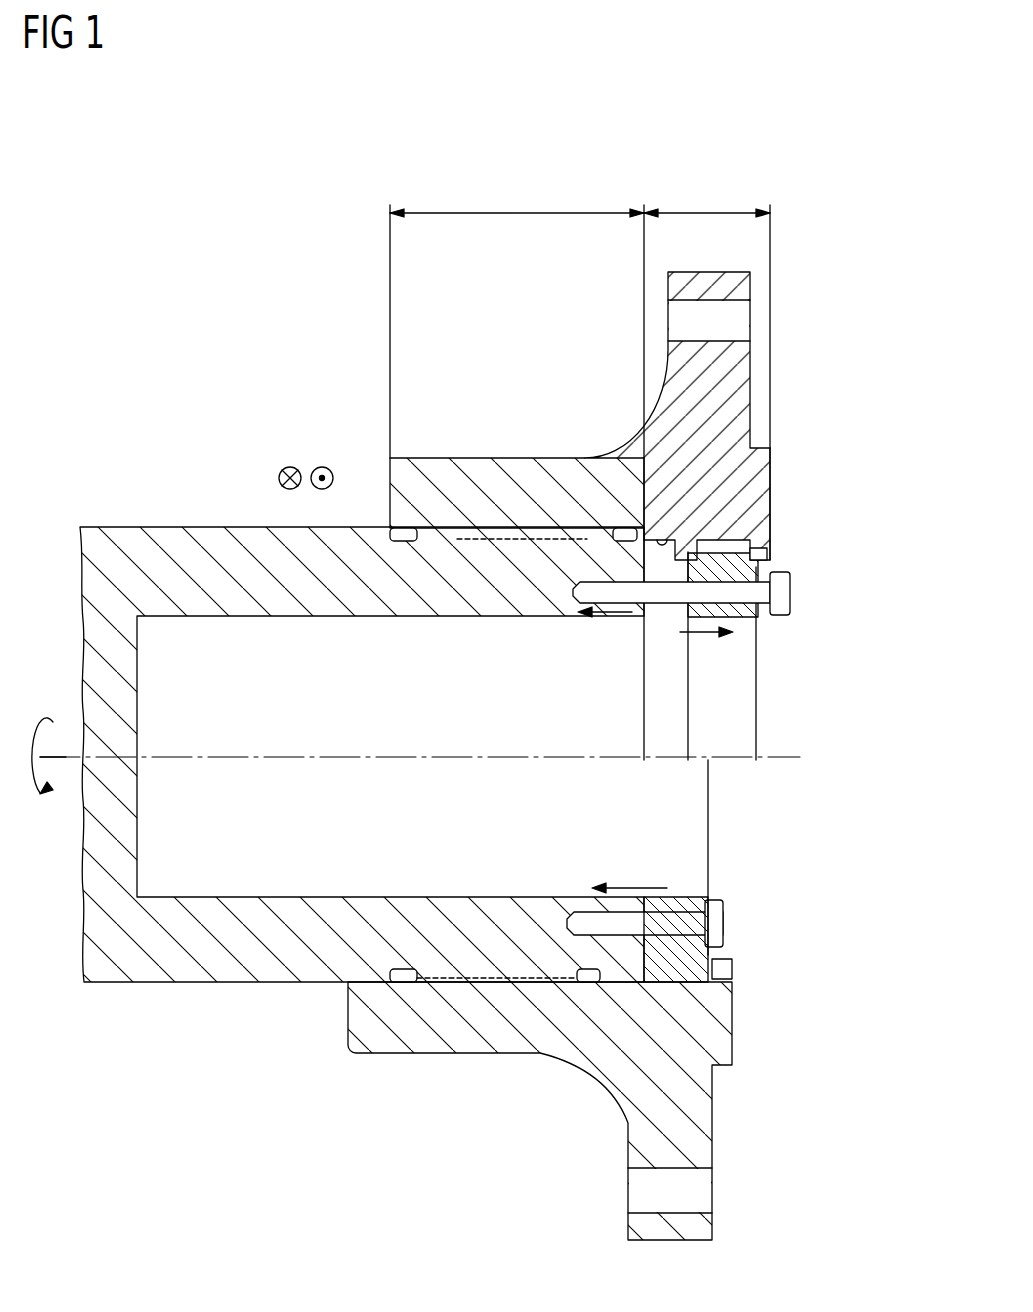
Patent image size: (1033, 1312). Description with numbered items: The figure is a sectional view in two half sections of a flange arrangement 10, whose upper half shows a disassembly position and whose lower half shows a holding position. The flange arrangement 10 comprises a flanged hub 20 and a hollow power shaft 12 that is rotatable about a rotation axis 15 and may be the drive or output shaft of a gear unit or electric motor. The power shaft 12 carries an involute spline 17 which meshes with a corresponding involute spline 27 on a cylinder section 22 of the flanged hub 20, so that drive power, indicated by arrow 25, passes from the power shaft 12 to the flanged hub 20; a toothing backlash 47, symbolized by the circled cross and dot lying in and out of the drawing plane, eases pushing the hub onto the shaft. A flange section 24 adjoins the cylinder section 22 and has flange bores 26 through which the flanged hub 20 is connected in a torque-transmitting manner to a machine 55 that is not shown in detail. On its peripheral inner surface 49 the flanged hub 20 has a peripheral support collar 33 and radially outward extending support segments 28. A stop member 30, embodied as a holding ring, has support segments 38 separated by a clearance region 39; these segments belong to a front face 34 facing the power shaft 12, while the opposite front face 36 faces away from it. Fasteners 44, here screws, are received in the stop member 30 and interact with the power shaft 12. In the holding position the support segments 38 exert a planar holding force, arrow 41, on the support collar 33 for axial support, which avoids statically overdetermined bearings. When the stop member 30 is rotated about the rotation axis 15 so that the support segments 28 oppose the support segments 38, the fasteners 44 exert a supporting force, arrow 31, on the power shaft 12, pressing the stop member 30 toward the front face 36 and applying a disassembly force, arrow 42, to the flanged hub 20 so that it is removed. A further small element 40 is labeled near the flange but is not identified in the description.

The flange arrangement 10 is at (342, 364).
The power shaft 12 is at (183, 540).
The rotation axis 15 is at (67, 763).
The involute spline 17 is at (432, 528).
The flanged hub 20 is at (675, 362).
The cylinder section 22 is at (515, 213).
The flange section 24 is at (712, 213).
The drive power arrow 25 is at (40, 720).
The flange bores 26 is at (740, 320).
The involute spline 27 is at (583, 528).
The support segments 28 is at (770, 565).
The stop member 30 is at (758, 627).
The supporting force arrow 31 is at (600, 618).
The support collar 33 is at (687, 563).
The front face 34 is at (688, 612).
The front face 36 is at (727, 900).
The support segments 38 is at (765, 522).
The clearance region 39 is at (723, 967).
The ring 40 is at (768, 552).
The holding force arrow 41 is at (598, 878).
The disassembly force arrow 42 is at (707, 637).
The fasteners 44 is at (785, 594).
The toothing backlash 47 is at (322, 466).
The peripheral inner surface 49 is at (660, 535).
The machine 55 is at (818, 246).